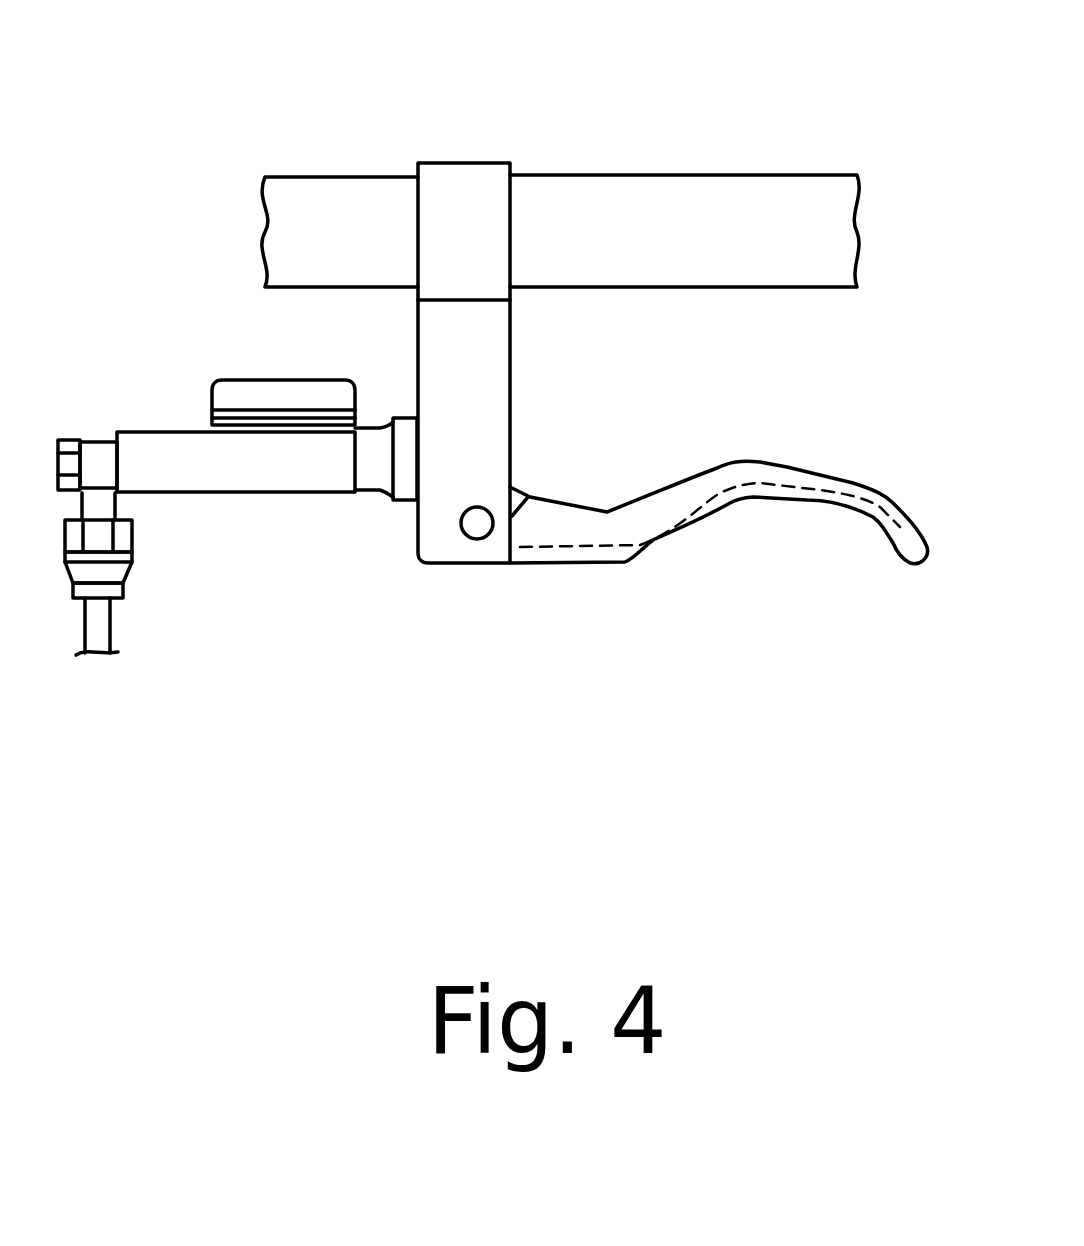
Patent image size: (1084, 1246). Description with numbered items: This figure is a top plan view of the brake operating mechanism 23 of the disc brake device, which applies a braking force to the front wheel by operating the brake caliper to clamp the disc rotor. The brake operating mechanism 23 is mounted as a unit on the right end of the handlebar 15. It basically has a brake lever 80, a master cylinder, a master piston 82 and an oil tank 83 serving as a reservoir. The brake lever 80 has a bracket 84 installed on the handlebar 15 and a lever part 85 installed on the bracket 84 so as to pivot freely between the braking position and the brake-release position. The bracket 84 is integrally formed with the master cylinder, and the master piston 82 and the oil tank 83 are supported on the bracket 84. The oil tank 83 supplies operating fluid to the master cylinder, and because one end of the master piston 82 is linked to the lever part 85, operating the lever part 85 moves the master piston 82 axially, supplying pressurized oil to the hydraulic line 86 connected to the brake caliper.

The handlebar 15 is at (732, 175).
The brake operating mechanism 23 is at (601, 130).
The brake lever 80 is at (715, 527).
The master piston 82 is at (188, 490).
The oil tank 83 is at (210, 390).
The bracket 84 is at (510, 378).
The lever part 85 is at (717, 468).
The hydraulic line 86 is at (113, 632).